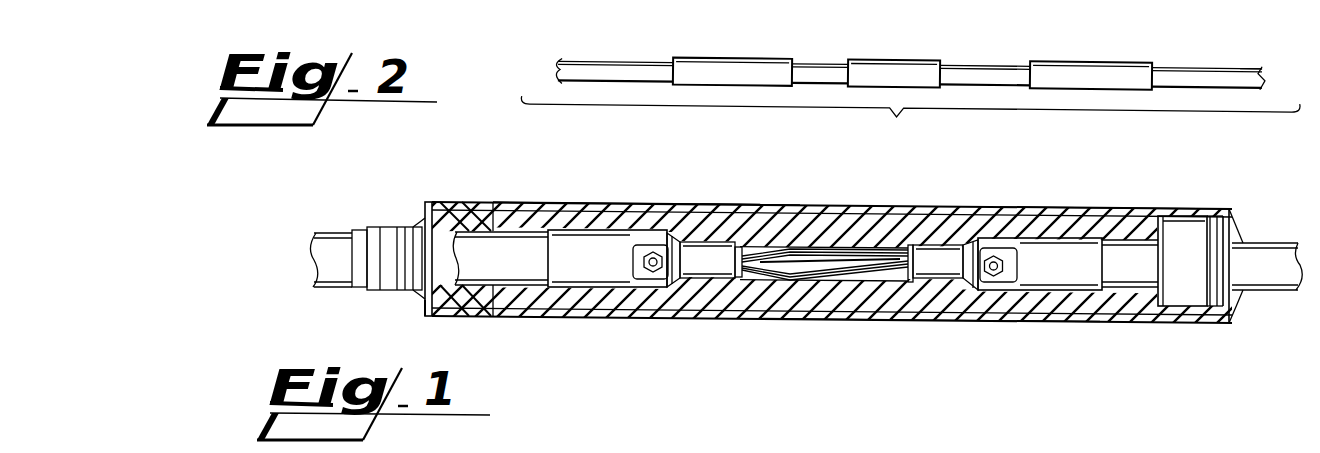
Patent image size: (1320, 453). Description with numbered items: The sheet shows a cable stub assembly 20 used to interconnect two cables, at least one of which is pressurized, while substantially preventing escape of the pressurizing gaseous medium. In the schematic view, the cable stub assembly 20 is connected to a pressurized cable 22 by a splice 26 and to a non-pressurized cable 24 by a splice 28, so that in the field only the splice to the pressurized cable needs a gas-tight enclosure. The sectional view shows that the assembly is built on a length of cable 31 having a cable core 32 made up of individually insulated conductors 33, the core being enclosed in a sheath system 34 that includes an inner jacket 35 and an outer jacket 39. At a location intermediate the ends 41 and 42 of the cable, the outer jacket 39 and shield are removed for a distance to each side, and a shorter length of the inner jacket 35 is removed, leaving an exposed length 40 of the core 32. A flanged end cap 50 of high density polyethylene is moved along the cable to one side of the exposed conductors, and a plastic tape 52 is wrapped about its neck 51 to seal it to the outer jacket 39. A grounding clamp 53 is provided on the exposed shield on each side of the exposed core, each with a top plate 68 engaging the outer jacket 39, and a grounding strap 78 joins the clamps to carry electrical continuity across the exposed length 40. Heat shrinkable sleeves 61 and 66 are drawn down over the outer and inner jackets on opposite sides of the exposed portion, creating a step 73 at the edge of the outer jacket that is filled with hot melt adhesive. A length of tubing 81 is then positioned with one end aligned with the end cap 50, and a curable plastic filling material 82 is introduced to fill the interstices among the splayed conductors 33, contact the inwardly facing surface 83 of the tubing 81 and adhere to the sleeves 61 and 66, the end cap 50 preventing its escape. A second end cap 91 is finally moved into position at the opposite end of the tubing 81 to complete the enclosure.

In FIG. 2, the cable stub assembly 20 is at (897, 87).
In FIG. 1, the cable stub assembly 20 is at (760, 195).
In FIG. 2, the pressurized cable 22 is at (588, 63).
In FIG. 2, the non-pressurized cable 24 is at (1263, 74).
In FIG. 2, the splice 26 is at (752, 88).
In FIG. 2, the splice 28 is at (1112, 102).
In FIG. 1, the length of cable 31 is at (323, 231).
In FIG. 1, the cable core 32 is at (810, 277).
In FIG. 1, the individually insulated conductors 33 is at (840, 248).
In FIG. 1, the sheath system 34 is at (545, 227).
In FIG. 1, the inner jacket 35 is at (737, 282).
In FIG. 1, the outer jacket 39 is at (1132, 273).
In FIG. 1, the exposed length of the core 40 is at (872, 288).
In FIG. 1, the end of the cable 41 is at (419, 308).
In FIG. 1, the end of the cable 42 is at (1240, 228).
In FIG. 1, the flanged end cap 50 is at (473, 227).
In FIG. 1, the neck 51 is at (422, 224).
In FIG. 1, the plastic tape 52 is at (378, 222).
In FIG. 1, the grounding clamp 53 is at (635, 265).
In FIG. 1, the heat shrinkable sleeve 61 is at (602, 245).
In FIG. 1, the heat shrinkable sleeve 66 is at (1055, 248).
In FIG. 1, the top plate 68 is at (655, 253).
In FIG. 1, the step 73 is at (673, 240).
In FIG. 1, the grounding strap 78 is at (835, 262).
In FIG. 1, the tubing 81 is at (520, 201).
In FIG. 1, the curable plastic filling material 82 is at (937, 303).
In FIG. 1, the inwardly facing surface 83 is at (1098, 208).
In FIG. 1, the second end cap 91 is at (1233, 315).